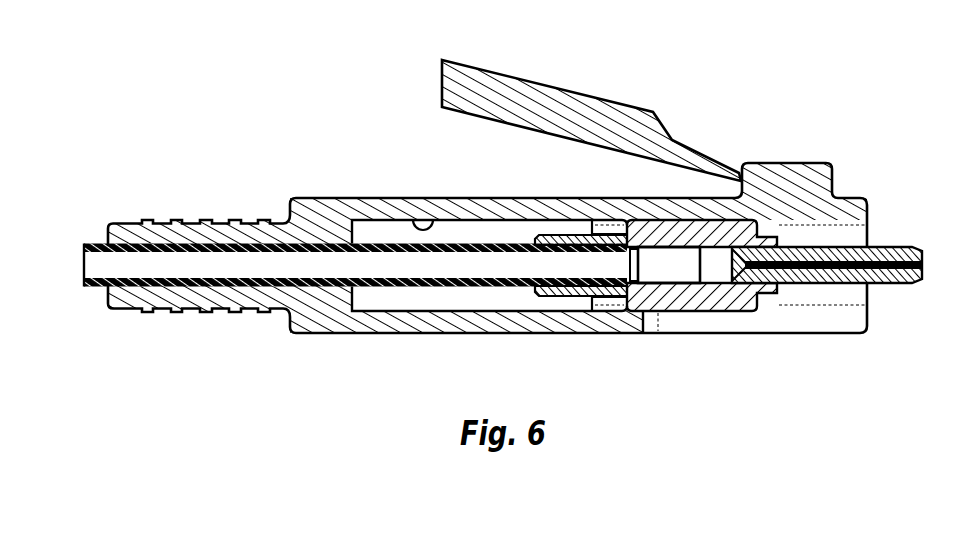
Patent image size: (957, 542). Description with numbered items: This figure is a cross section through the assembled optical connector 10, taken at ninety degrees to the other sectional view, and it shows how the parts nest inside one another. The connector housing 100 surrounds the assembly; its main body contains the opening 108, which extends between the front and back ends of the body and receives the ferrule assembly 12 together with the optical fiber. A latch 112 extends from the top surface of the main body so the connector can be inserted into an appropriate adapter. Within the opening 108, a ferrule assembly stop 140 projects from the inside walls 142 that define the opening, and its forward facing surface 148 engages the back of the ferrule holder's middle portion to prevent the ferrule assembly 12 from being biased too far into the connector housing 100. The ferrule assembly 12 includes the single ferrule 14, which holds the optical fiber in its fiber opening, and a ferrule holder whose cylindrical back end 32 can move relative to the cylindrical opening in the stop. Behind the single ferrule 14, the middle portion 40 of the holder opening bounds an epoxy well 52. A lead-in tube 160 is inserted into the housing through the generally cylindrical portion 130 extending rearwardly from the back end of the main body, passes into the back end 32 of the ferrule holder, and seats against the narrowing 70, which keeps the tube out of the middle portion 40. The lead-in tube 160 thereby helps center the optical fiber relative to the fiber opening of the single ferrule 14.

The optical connector 10 is at (843, 101).
The ferrule assembly 12 is at (732, 221).
The single ferrule 14 is at (918, 244).
The back end of the ferrule holder 32 is at (560, 297).
The middle portion of the opening 40 is at (665, 270).
The epoxy well 52 is at (712, 270).
The narrowing 70 is at (632, 275).
The connector housing 100 is at (334, 140).
The opening 108 is at (427, 300).
The latch 112 is at (596, 100).
The generally cylindrical portion 130 is at (162, 221).
The ferrule assembly stop 140 is at (605, 220).
The inside walls 142 is at (430, 222).
The forward facing surface 148 is at (607, 304).
The lead-in tube 160 is at (205, 290).